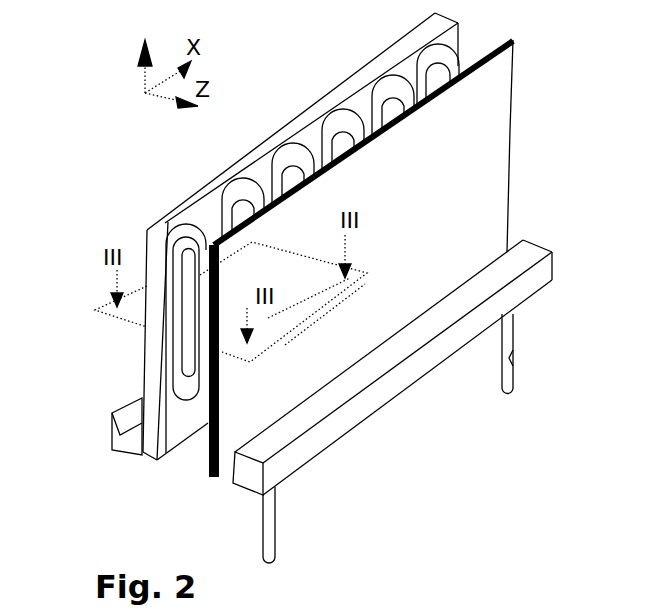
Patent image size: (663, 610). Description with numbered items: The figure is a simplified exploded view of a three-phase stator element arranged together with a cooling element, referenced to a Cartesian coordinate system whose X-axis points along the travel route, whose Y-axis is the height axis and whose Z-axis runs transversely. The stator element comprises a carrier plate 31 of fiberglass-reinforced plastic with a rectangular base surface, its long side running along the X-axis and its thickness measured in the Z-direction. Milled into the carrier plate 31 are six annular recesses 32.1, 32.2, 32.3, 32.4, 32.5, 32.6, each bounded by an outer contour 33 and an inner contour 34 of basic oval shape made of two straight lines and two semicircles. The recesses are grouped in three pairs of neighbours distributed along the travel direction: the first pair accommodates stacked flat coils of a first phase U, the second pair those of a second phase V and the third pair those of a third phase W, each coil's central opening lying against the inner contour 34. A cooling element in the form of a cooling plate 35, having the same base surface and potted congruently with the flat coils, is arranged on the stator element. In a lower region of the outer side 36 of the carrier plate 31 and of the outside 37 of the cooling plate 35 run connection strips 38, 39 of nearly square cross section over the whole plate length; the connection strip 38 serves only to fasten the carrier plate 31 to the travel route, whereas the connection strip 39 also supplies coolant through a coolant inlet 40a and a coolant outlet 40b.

The carrier plate 31 is at (263, 177).
The annular recess 32.1 is at (165, 235).
The annular recess 32.2 is at (227, 192).
The annular recess 32.3 is at (287, 145).
The annular recess 32.4 is at (330, 110).
The annular recess 32.5 is at (377, 78).
The annular recess 32.6 is at (427, 42).
The outer contour 33 is at (165, 340).
The inner contour 34 is at (176, 367).
The cooling plate 35 is at (513, 138).
The outer side of the carrier plate 36 is at (100, 389).
The outside of the cooling plate 37 is at (493, 120).
The connection strip 38 is at (125, 430).
The connection strip 39 is at (280, 468).
The coolant inlet 40a is at (273, 527).
The coolant outlet 40b is at (502, 393).